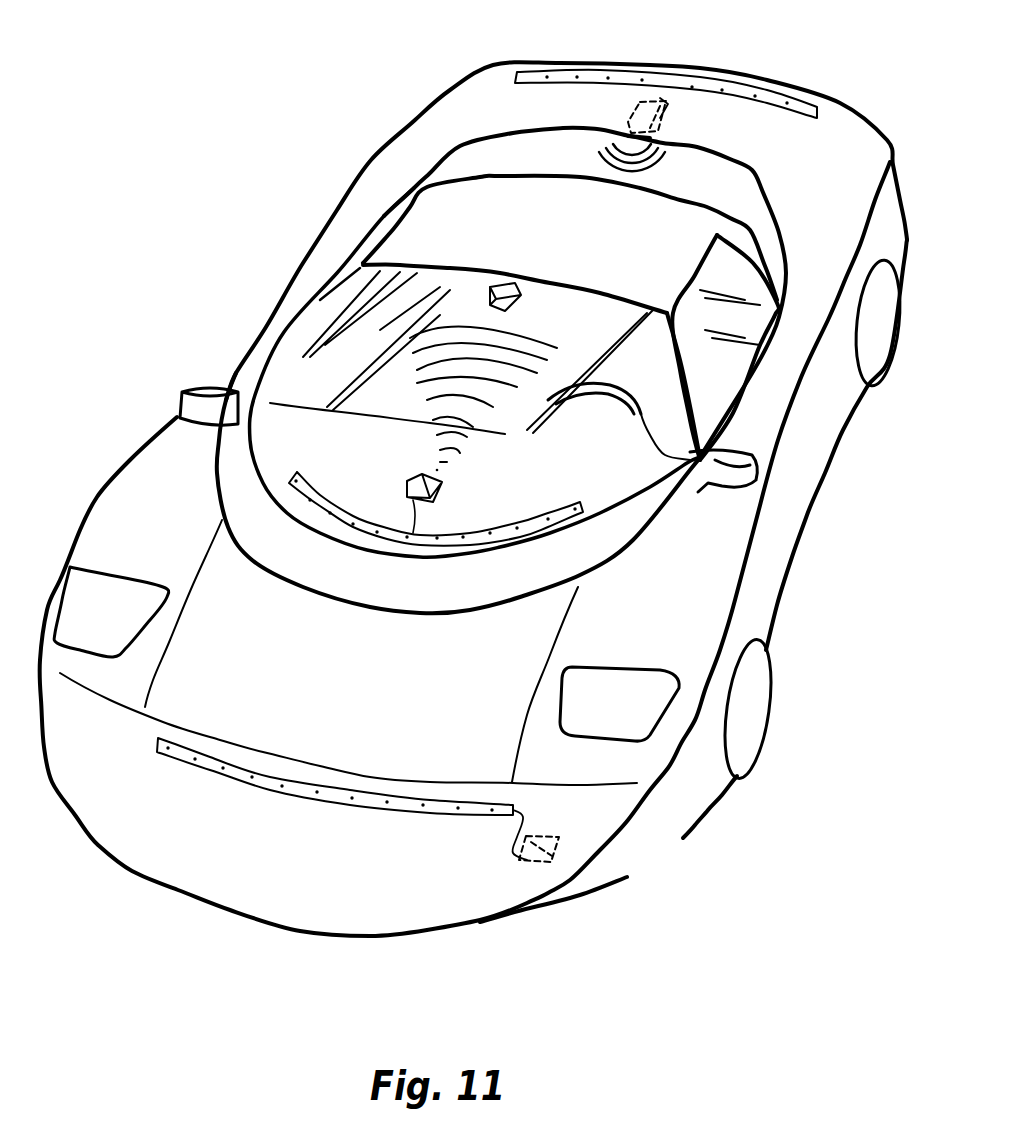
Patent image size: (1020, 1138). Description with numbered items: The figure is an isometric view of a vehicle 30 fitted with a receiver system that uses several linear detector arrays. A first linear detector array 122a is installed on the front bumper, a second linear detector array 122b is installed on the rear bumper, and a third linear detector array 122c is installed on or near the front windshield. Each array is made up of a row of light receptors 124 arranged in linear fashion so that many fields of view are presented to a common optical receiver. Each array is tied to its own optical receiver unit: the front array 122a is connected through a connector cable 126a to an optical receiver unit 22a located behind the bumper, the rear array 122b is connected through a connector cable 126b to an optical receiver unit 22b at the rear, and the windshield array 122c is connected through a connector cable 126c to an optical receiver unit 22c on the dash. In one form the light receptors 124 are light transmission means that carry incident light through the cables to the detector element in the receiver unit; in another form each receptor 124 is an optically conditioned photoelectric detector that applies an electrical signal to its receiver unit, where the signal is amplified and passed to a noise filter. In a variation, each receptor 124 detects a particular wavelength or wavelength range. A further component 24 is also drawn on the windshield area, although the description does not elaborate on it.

The vehicle 30 is at (871, 500).
The linear detector array 122b is at (819, 62).
The optical receiver unit 22b is at (762, 125).
The connector cable 126b is at (660, 98).
The control unit 24 is at (547, 245).
The optical receiver unit 22c is at (527, 465).
The connector cable 126c is at (527, 503).
The linear detector array 122c is at (477, 576).
The linear detector array 122a is at (293, 790).
The light receptor 124 is at (423, 803).
The connector cable 126a is at (605, 803).
The optical receiver unit 22a is at (670, 857).